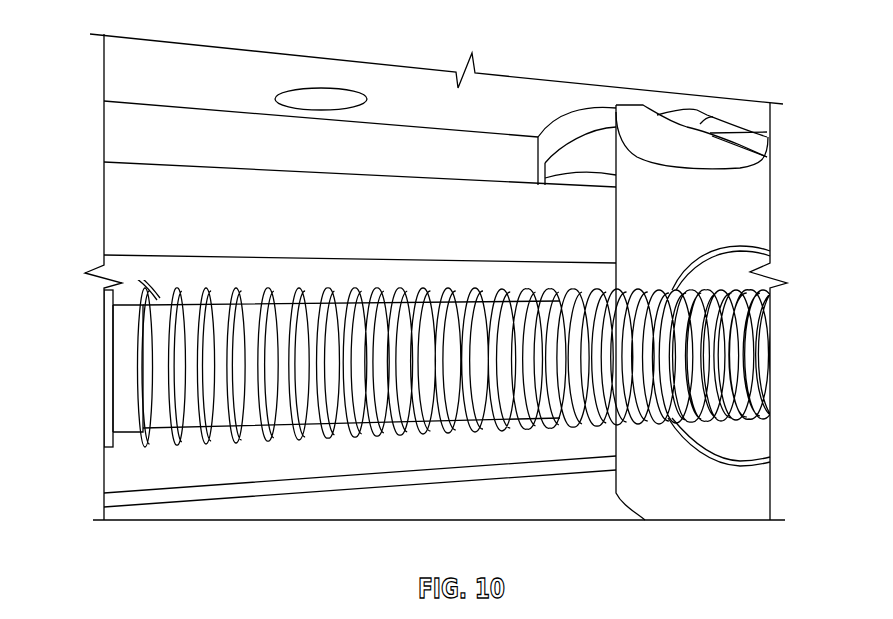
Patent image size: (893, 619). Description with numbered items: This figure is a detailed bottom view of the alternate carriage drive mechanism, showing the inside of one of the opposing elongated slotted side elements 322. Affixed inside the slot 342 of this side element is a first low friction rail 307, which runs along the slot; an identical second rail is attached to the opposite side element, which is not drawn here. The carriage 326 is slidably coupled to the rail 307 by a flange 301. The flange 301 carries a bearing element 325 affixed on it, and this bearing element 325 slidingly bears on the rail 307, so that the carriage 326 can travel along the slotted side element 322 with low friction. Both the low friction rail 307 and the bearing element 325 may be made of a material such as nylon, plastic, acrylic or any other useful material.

The slot 342 is at (104, 58).
The opposing elongated slotted side element 322 is at (104, 126).
The first low friction rail 307 is at (490, 243).
The bearing element 325 is at (598, 148).
The flange 301 is at (713, 117).
The carriage 326 is at (703, 213).